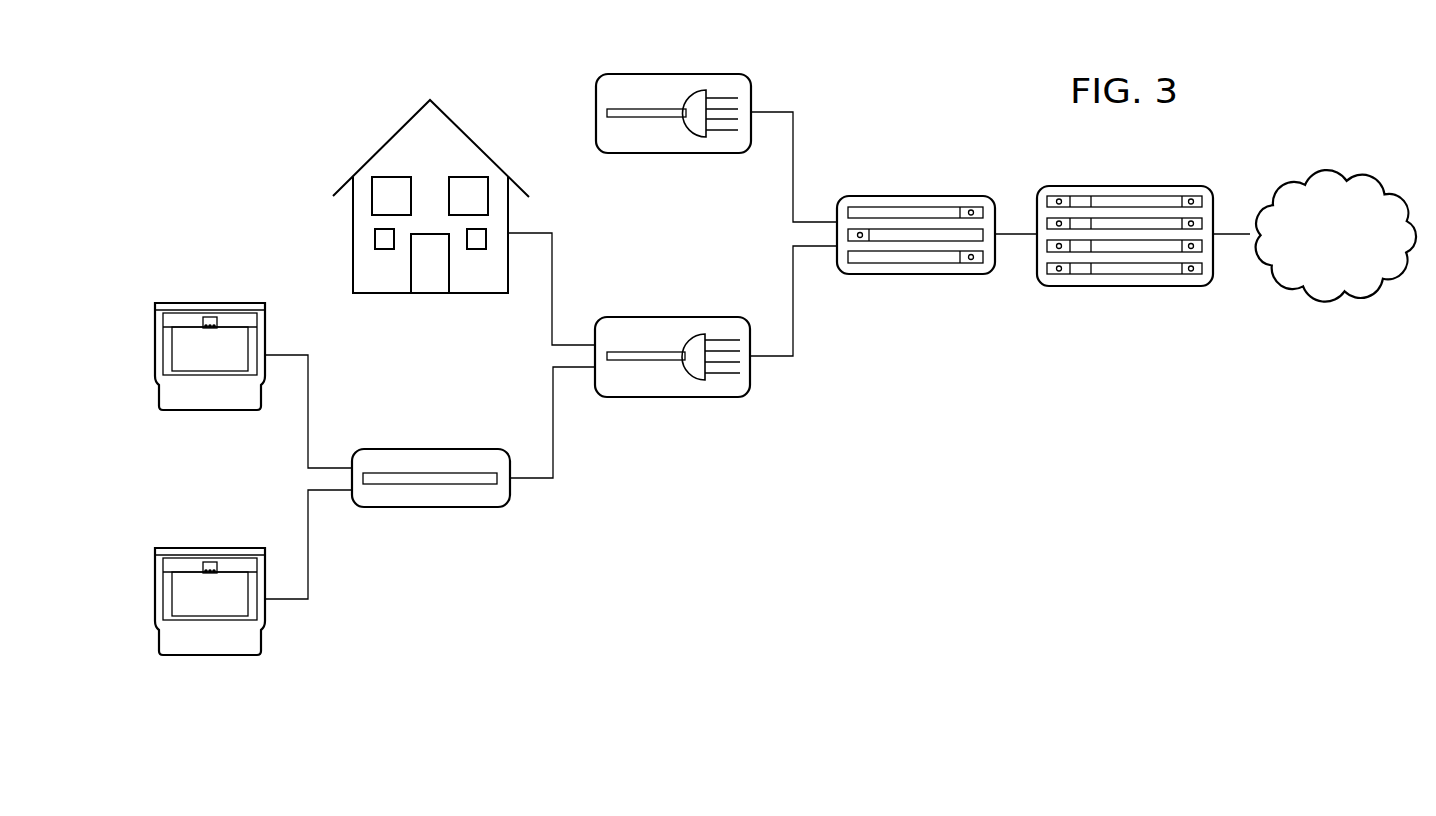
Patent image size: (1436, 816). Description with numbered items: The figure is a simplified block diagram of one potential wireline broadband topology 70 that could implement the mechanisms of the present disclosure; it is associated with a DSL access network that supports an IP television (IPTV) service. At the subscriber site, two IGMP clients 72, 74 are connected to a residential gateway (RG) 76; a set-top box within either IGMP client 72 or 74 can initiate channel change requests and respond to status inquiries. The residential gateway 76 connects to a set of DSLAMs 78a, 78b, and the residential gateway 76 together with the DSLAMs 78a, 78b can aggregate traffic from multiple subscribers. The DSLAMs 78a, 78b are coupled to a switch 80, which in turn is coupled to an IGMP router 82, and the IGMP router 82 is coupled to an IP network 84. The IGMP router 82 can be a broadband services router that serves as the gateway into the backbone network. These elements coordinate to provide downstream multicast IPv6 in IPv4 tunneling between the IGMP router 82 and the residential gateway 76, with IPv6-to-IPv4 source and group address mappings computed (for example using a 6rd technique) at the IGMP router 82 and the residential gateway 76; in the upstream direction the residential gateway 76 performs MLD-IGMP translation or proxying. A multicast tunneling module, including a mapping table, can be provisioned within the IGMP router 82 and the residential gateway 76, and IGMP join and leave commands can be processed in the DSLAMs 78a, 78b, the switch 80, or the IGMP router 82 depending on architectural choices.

The wireline broadband topology 70 is at (1296, 80).
The IGMP client 72 is at (210, 411).
The IGMP client 74 is at (210, 656).
The residential gateway (RG) 76 is at (425, 508).
The DSLAM 78a is at (667, 398).
The DSLAM 78b is at (668, 154).
The switch 80 is at (920, 275).
The IGMP router 82 is at (1130, 287).
The IP network 84 is at (1355, 305).